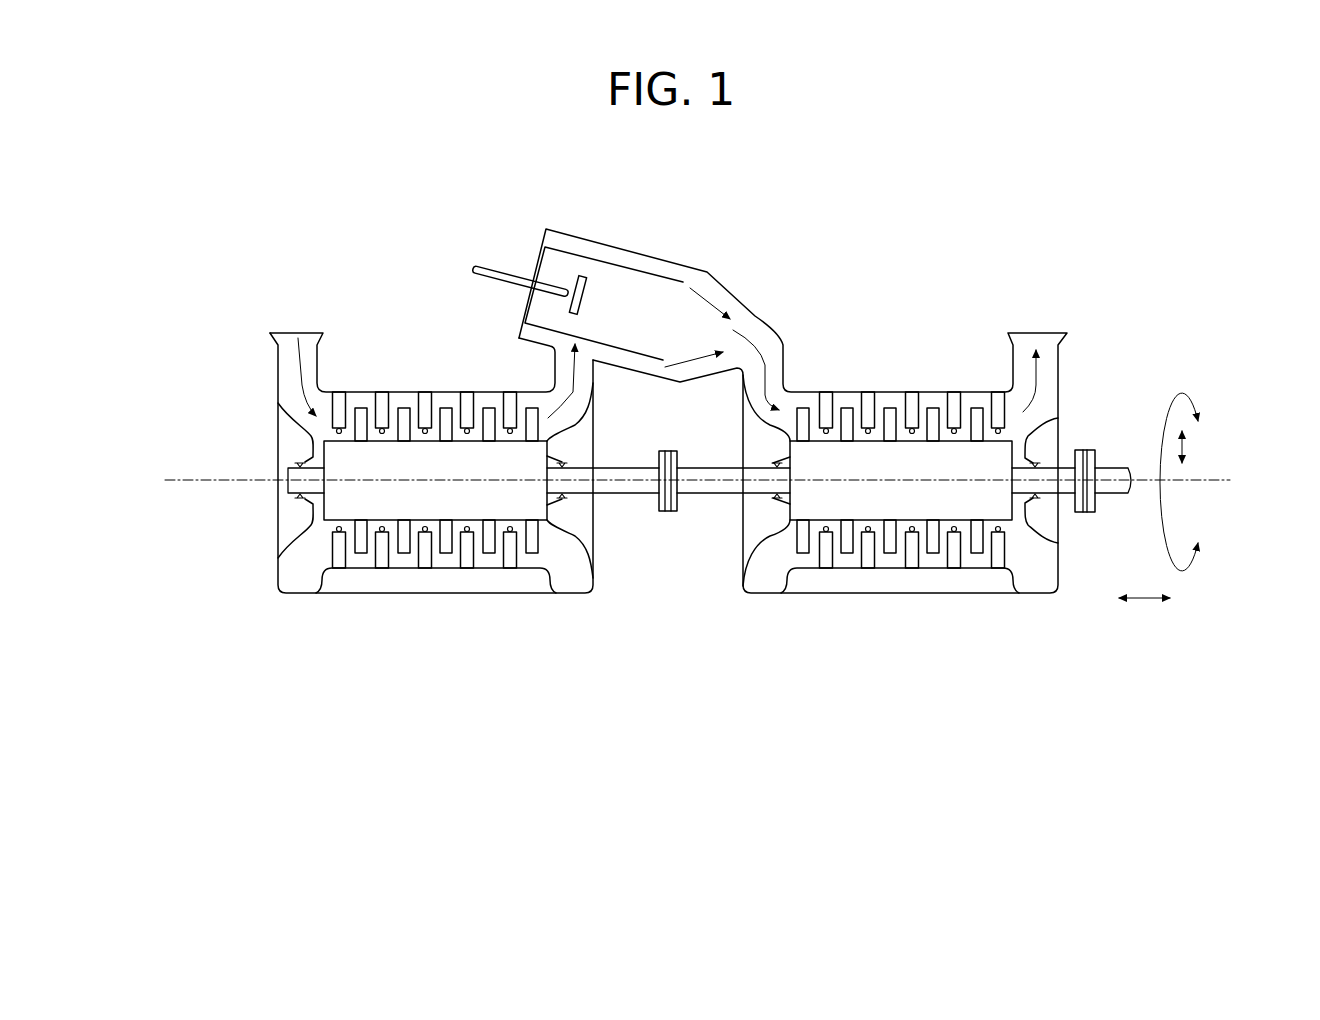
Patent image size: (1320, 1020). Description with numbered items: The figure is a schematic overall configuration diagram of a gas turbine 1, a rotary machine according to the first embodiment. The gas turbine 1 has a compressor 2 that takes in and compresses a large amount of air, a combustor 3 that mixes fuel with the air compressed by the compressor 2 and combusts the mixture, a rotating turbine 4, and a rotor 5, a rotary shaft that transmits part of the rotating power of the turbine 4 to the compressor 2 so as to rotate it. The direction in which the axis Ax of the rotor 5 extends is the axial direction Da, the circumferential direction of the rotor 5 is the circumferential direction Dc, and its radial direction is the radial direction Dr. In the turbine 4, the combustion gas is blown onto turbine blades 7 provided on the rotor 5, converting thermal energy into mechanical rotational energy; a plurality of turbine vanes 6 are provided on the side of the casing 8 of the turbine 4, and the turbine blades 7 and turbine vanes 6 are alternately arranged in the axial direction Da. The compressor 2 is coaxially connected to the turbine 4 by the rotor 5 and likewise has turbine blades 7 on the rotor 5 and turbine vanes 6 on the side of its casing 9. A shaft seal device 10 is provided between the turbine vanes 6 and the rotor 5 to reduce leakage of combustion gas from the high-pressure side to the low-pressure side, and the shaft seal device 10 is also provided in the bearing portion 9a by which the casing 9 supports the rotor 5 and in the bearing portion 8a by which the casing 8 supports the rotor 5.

The gas turbine 1 is at (1003, 256).
The compressor 2 is at (439, 506).
The combustor 3 is at (787, 207).
The turbine 4 is at (918, 514).
The rotor 5 is at (693, 495).
The turbine vanes 6 is at (423, 407).
The turbine blades 7 is at (405, 408).
The casing 8 is at (845, 569).
The bearing portion 8a is at (918, 480).
The casing 9 is at (380, 569).
The bearing portion 9a is at (279, 435).
The shaft seal device 10 is at (297, 499).
The axis Ax is at (187, 479).
The axial direction Da is at (1144, 620).
The radial direction Dr is at (1186, 446).
The circumferential direction Dc is at (1181, 393).